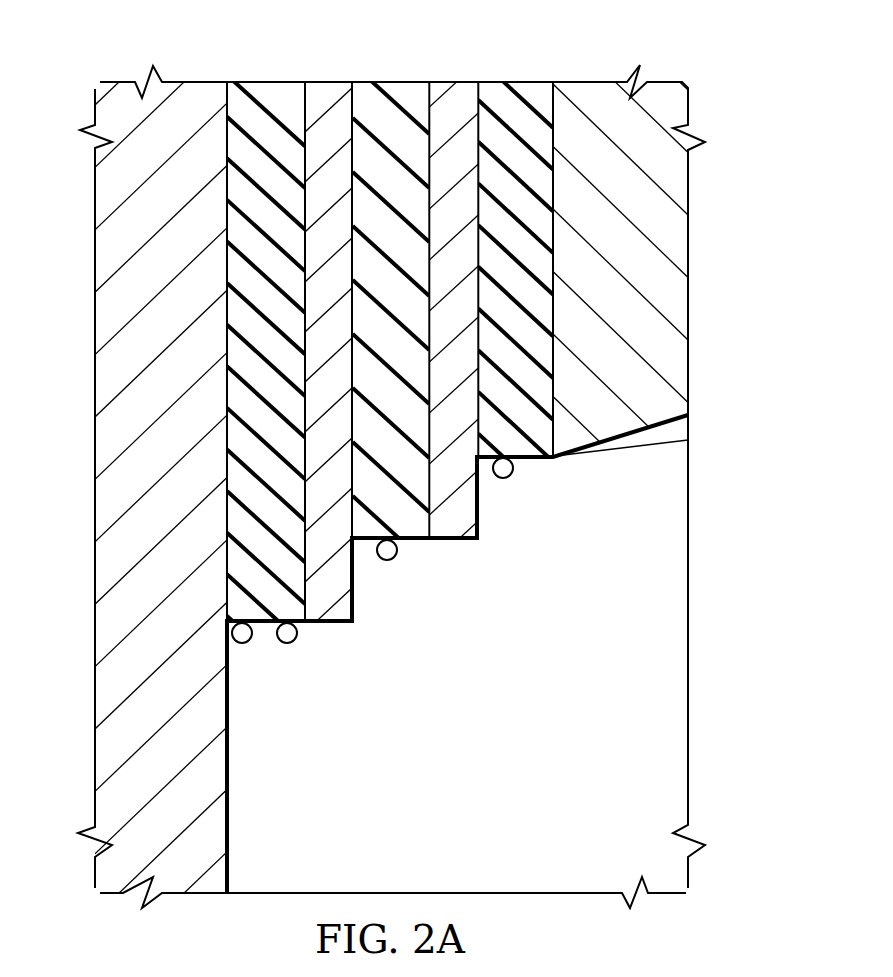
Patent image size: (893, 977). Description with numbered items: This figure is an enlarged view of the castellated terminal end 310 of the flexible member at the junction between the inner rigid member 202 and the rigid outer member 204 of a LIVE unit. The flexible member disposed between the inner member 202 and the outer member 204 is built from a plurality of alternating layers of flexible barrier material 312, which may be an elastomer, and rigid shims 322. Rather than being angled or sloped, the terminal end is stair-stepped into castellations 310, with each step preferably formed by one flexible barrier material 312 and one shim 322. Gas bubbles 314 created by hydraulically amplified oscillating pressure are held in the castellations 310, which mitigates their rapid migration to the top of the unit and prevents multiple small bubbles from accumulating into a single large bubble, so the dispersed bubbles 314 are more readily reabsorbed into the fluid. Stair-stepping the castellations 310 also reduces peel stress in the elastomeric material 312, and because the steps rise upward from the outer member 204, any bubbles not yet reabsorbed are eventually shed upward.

The inner rigid member 202 is at (680, 243).
The rigid outer member 204 is at (103, 253).
The flexible barrier material 312 is at (265, 90).
The rigid shim 322 is at (328, 92).
The castellated terminal end 310 is at (314, 665).
The gas bubbles 314 is at (280, 643).